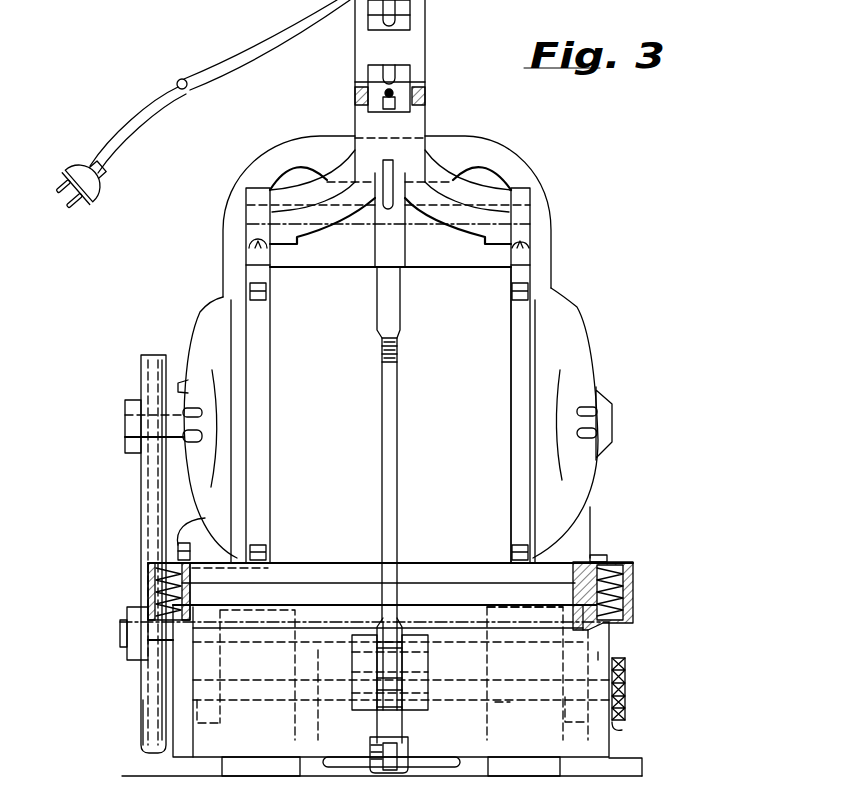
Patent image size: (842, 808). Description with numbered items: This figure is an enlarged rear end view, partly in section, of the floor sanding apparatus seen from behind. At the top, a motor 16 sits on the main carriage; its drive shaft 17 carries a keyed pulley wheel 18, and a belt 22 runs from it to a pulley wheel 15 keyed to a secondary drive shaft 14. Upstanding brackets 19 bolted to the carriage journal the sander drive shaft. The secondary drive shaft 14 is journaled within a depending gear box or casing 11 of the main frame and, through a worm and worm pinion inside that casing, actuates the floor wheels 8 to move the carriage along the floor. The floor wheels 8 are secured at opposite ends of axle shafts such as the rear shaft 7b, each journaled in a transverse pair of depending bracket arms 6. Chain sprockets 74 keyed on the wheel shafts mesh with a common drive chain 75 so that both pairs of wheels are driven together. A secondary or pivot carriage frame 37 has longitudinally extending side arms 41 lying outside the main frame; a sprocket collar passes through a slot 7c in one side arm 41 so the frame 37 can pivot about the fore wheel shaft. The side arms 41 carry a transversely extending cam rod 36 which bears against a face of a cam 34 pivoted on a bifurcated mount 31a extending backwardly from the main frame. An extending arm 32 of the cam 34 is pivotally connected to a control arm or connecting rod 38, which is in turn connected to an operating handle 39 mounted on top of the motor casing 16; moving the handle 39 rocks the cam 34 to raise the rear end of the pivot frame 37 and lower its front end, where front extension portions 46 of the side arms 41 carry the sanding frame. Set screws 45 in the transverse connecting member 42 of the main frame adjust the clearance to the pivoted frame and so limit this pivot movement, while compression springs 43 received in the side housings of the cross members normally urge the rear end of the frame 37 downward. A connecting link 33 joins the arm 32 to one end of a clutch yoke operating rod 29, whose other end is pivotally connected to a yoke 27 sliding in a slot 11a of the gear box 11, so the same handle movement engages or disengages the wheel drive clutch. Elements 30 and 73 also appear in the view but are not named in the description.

The bracket arms 6 is at (392, 681).
The axle shaft 7b is at (508, 703).
The slot 7c is at (603, 650).
The floor wheels 8 is at (225, 770).
The gear box 11 is at (438, 764).
The slot 11a is at (340, 749).
The secondary drive shaft 14 is at (120, 633).
The pulley wheel 15 is at (143, 707).
The motor 16 is at (572, 337).
The drive shaft 17 is at (125, 428).
The pulley wheel 18 is at (141, 470).
The upstanding brackets 19 is at (592, 518).
The belt 22 is at (153, 356).
The yoke 27 is at (368, 772).
The clutch yoke operating rod 29 is at (392, 774).
The sleeve cap 30 is at (373, 731).
The bifurcated mount 31a is at (347, 668).
The extending arm 32 is at (393, 673).
The connecting link 33 is at (378, 720).
The cam 34 is at (402, 625).
The cam rod 36 is at (537, 628).
The secondary carriage frame 37 is at (611, 641).
The control arm 38 is at (400, 405).
The control handle 39 is at (355, 122).
The side arms 41 is at (610, 740).
The transverse connecting member 42 is at (313, 562).
The compression springs 43 is at (193, 594).
The set screws 45 is at (190, 549).
The front extension portions 46 is at (656, 528).
The hood 73 is at (249, 165).
The chain sprockets 74 is at (618, 729).
The drive chain 75 is at (625, 703).